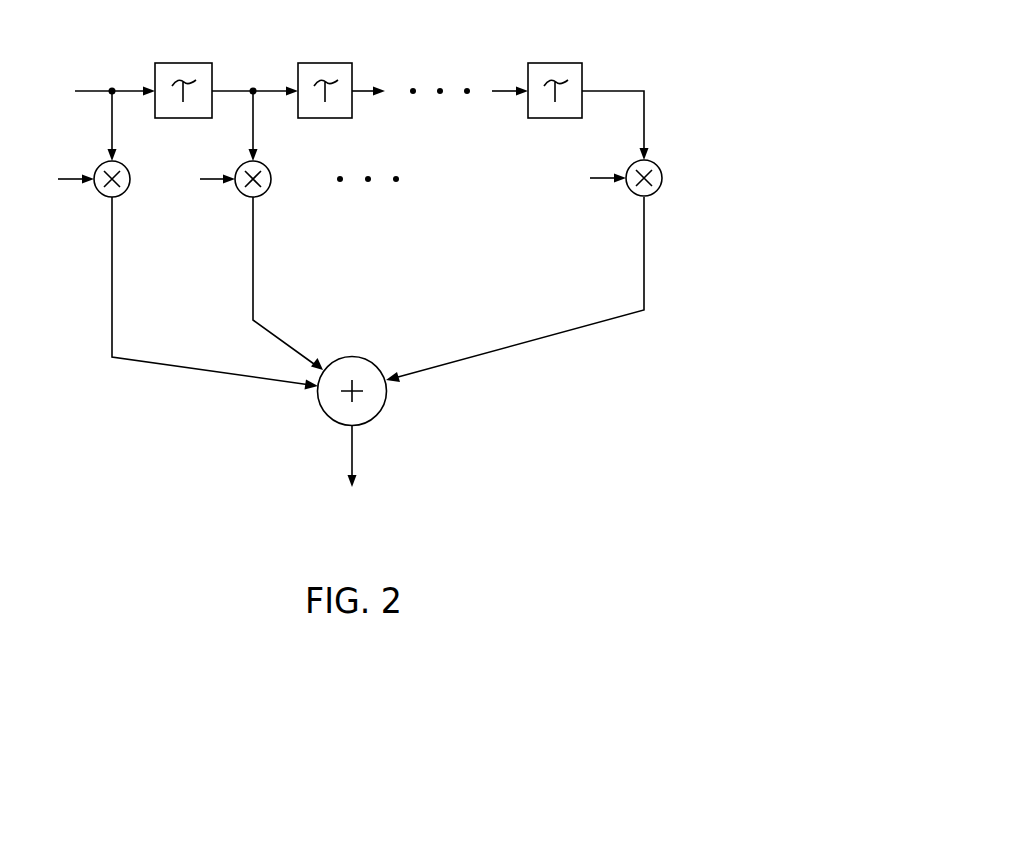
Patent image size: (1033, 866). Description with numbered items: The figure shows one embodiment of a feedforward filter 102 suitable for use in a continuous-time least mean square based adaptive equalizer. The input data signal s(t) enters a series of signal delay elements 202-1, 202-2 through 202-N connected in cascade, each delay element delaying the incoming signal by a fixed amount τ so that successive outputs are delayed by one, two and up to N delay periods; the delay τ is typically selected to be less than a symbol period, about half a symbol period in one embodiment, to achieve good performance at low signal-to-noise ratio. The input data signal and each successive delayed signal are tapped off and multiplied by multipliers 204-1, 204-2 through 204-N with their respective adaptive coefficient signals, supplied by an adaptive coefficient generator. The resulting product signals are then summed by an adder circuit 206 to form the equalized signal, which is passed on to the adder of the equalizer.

The feedforward filter 102 is at (649, 388).
The signal delay element 202-1 is at (200, 65).
The signal delay element 202-2 is at (338, 65).
The signal delay element 202-N is at (571, 65).
The multiplier 204-1 is at (125, 192).
The multiplier 204-2 is at (266, 192).
The multiplier 204-N is at (657, 191).
The adder circuit 206 is at (377, 412).